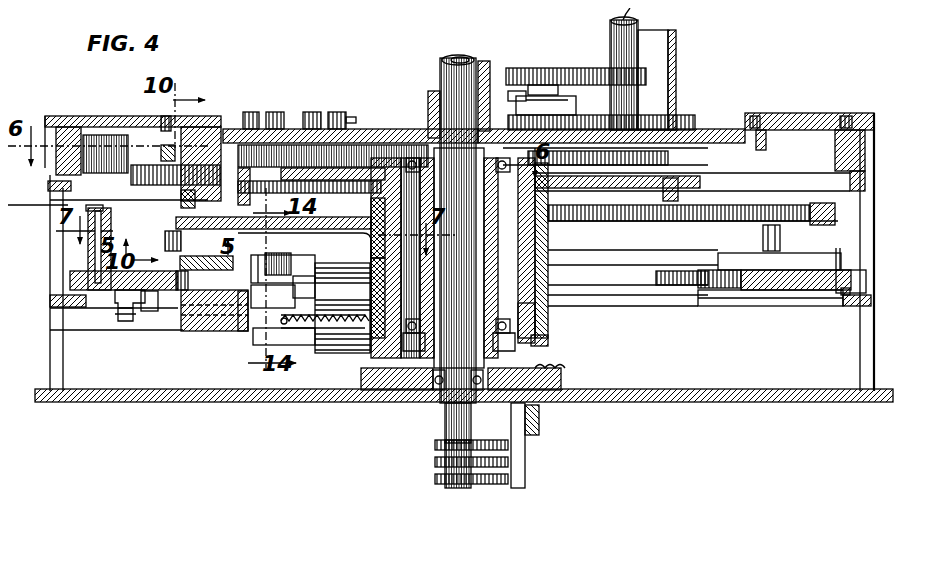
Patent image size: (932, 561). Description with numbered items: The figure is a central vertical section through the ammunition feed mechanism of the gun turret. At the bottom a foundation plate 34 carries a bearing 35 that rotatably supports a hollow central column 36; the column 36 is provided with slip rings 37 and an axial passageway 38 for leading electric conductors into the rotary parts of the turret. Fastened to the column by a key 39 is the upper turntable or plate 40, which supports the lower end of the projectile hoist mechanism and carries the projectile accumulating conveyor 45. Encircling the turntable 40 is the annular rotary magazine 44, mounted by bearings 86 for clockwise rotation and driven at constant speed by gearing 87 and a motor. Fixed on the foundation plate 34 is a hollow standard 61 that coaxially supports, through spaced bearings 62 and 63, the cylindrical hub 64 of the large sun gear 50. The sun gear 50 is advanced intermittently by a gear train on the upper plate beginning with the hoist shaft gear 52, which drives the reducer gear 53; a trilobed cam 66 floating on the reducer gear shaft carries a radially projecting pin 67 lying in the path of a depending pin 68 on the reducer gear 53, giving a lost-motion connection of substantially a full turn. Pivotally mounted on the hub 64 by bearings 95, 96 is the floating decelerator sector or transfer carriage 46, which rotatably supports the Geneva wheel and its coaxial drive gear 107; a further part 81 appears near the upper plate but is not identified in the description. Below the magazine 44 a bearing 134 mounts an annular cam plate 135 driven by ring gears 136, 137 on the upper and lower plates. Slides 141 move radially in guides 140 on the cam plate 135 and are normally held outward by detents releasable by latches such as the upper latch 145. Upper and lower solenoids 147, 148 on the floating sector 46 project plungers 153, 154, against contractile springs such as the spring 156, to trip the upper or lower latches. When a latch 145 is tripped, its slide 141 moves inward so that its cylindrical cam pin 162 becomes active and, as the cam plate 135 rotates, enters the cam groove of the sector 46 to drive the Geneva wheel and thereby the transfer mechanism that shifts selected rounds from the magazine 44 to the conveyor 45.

The foundation plate 34 is at (242, 390).
The bearing 35 is at (428, 384).
The hollow central column 36 is at (440, 66).
The slip rings 37 is at (422, 471).
The axial passageway 38 is at (456, 51).
The key 39 is at (420, 95).
The upper turntable 40 is at (700, 121).
The annular rotary magazine 44 is at (850, 105).
The projectile accumulating conveyor 45 is at (271, 101).
The floating decelerator sector 46 is at (207, 108).
The sun gear 50 is at (703, 176).
The hoist shaft gear 52 is at (638, 67).
The reducer gear 53 is at (552, 60).
The hollow standard 61 is at (478, 238).
The bearing 62 is at (492, 160).
The bearing 63 is at (490, 318).
The cylindrical hub 64 is at (530, 305).
The trilobed cam 66 is at (533, 89).
The radially projecting pin 67 is at (504, 86).
The downwardly depending pin 68 is at (540, 80).
The gear 81 is at (665, 152).
The bearings 86 is at (860, 174).
The gearing 87 is at (860, 150).
The bearing 95 is at (368, 236).
The bearing 96 is at (372, 298).
The drive gear 107 is at (125, 168).
The bearing 134 is at (833, 298).
The annular cam plate 135 is at (778, 275).
The ring gear 136 is at (760, 136).
The ring gear 137 is at (801, 184).
The guides 140 is at (75, 258).
The slides 141 is at (204, 267).
The upper latch 145 is at (112, 300).
The upper solenoid 147 is at (318, 272).
The lower solenoid 148 is at (340, 347).
The upper plunger 153 is at (145, 303).
The lower plunger 154 is at (166, 306).
The contractile coil spring 156 is at (325, 318).
The cam pin 162 is at (176, 215).